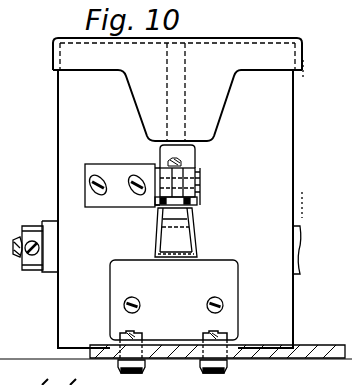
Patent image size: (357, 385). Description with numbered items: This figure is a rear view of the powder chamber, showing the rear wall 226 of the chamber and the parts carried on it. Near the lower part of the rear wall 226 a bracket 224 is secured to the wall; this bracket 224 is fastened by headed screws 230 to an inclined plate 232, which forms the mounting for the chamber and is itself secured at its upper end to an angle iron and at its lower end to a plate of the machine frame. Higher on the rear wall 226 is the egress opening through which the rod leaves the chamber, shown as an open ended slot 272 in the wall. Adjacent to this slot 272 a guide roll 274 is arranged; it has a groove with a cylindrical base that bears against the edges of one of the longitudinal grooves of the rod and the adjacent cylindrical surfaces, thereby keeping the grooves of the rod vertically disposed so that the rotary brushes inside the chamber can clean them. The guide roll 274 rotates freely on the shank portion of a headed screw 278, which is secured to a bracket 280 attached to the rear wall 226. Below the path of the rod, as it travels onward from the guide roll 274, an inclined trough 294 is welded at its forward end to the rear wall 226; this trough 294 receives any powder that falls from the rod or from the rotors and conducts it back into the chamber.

The rear wall 226 is at (75, 99).
The bracket 280 is at (118, 175).
The open ended slot 272 is at (193, 157).
The headed screw 278 is at (197, 175).
The guide roll 274 is at (197, 203).
The inclined trough 294 is at (197, 235).
The bracket 224 is at (222, 291).
The headed screws 230 is at (137, 334).
The inclined plate 232 is at (283, 361).